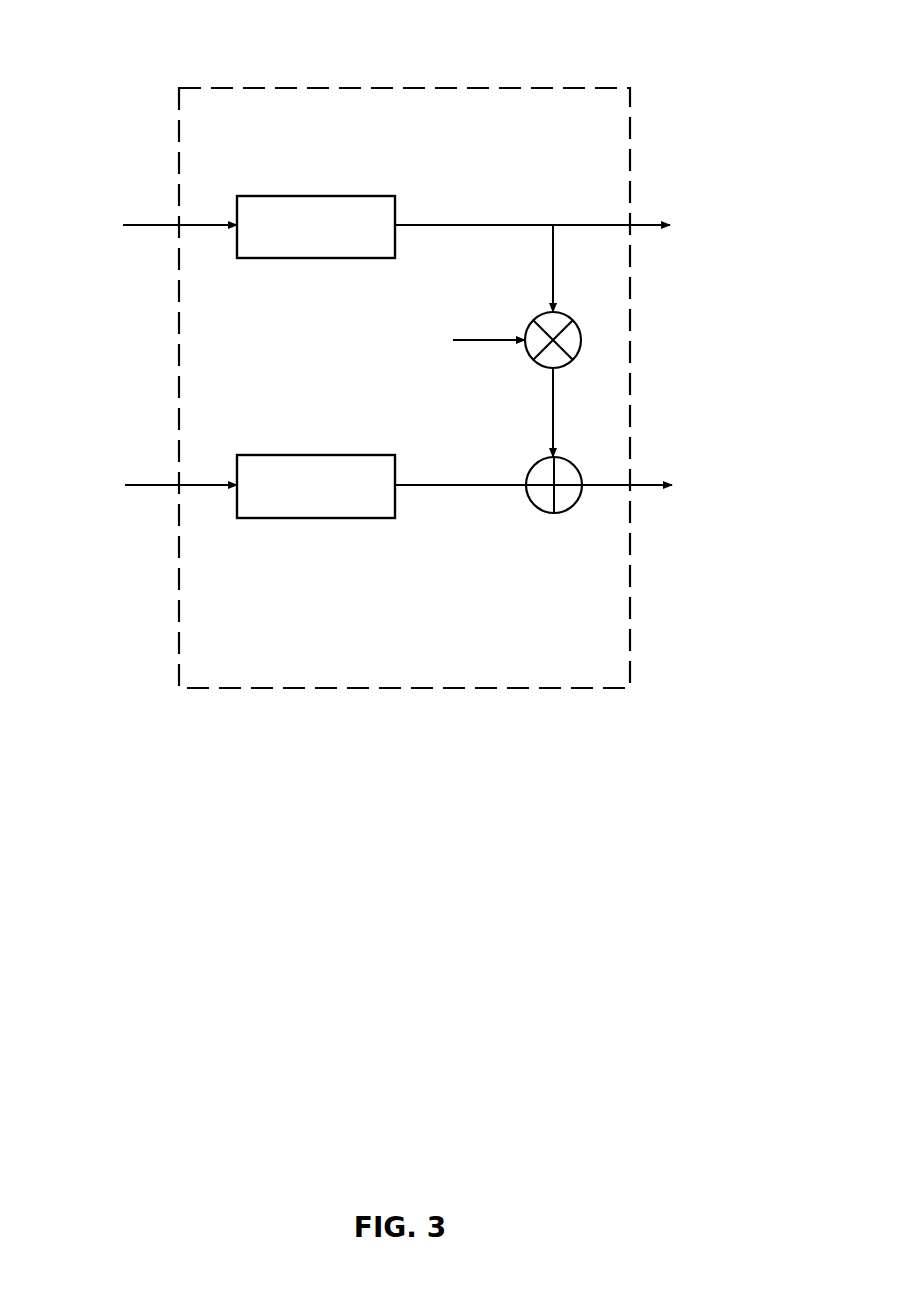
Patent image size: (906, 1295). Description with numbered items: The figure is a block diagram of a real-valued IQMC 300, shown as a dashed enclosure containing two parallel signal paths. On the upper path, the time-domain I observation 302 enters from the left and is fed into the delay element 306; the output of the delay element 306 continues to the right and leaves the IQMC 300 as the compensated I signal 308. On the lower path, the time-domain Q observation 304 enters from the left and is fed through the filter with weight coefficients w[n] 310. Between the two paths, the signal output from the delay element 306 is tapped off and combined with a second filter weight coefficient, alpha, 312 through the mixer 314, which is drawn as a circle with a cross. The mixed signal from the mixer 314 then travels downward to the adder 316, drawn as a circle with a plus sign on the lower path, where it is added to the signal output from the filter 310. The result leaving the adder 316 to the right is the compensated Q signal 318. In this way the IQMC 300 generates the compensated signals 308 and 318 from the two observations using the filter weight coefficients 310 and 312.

The real-valued IQMC 300 is at (398, 88).
The time-domain I observation 302 is at (144, 241).
The time-domain Q observation 304 is at (143, 506).
The delay element 306 is at (312, 196).
The compensated I signal 308 is at (574, 241).
The filter with weight coefficients w[n] 310 is at (318, 518).
The second filter weight coefficient 312 is at (466, 349).
The mixer 314 is at (536, 321).
The adder 316 is at (554, 513).
The compensated Q signal 318 is at (577, 507).